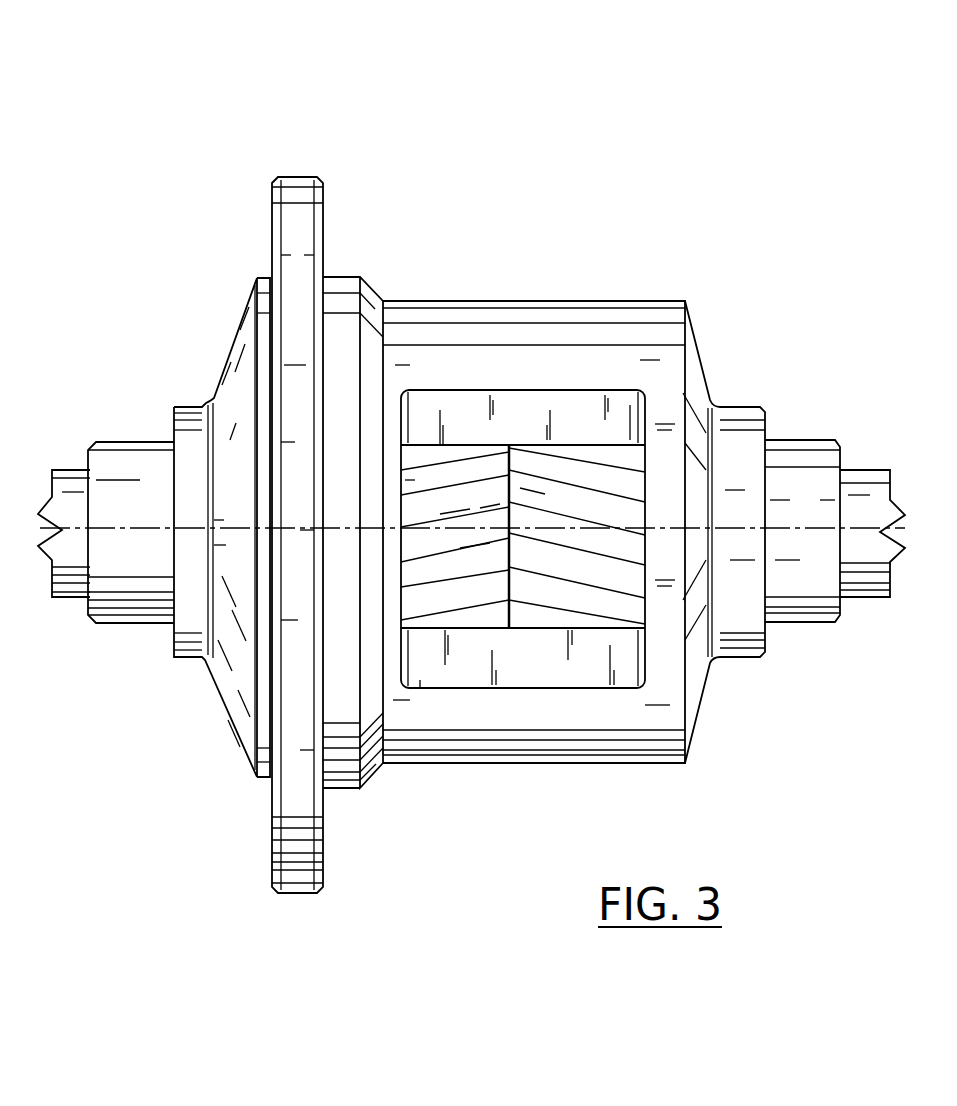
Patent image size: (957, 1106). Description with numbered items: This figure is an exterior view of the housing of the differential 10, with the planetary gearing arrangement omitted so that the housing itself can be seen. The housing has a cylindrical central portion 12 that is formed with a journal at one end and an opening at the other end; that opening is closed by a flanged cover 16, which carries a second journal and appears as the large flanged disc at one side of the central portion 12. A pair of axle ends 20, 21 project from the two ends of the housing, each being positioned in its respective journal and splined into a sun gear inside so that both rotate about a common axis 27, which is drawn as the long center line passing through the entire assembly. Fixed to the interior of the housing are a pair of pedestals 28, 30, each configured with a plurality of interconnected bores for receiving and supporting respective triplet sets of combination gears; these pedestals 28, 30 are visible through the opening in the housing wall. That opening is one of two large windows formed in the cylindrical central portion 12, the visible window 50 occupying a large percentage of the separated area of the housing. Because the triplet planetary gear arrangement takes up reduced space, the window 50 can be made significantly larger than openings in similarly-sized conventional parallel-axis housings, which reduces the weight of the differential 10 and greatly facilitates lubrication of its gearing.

The differential 10 is at (530, 95).
The cylindrical central portion 12 is at (518, 313).
The flanged cover 16 is at (247, 352).
The axle end 20 is at (858, 598).
The axle end 21 is at (66, 600).
The common axis 27 is at (72, 525).
The pedestal 28 is at (460, 408).
The pedestal 30 is at (552, 653).
The window 50 is at (645, 480).